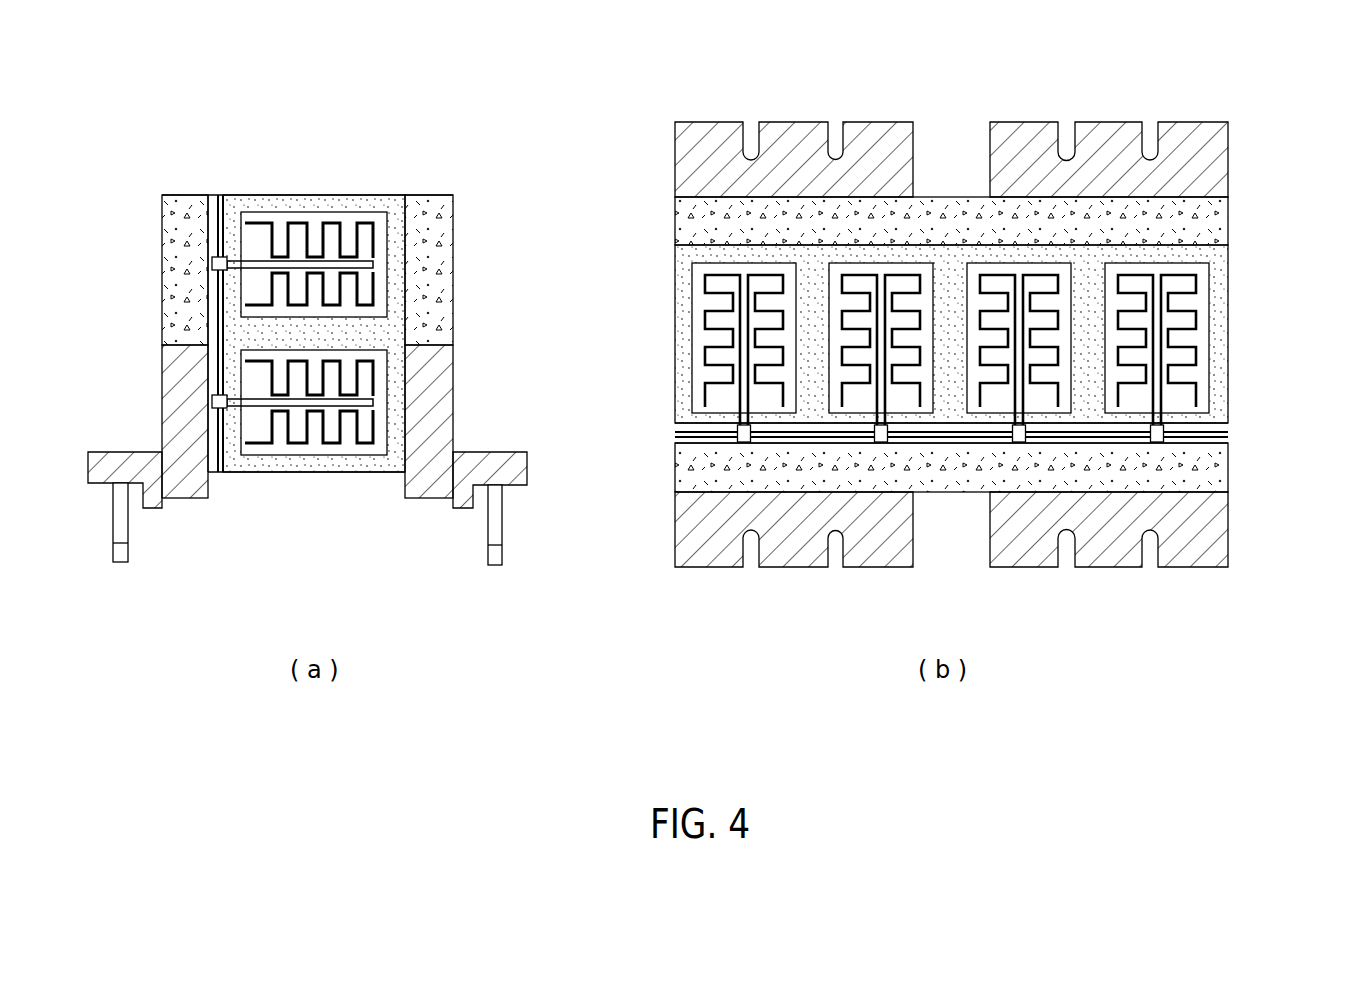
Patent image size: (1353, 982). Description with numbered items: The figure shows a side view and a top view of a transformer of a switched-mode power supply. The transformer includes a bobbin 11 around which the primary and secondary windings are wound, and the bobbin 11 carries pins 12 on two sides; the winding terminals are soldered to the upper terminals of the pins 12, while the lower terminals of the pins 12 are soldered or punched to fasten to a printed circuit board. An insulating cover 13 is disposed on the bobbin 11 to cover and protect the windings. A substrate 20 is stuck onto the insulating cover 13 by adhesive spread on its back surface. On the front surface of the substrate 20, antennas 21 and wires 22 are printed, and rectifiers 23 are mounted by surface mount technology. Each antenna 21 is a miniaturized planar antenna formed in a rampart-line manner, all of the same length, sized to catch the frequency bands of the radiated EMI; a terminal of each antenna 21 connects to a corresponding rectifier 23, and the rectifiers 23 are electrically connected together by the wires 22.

The bobbin 11 is at (503, 468).
The pins 12 is at (499, 524).
The insulating cover 13 is at (450, 280).
The substrate 20 is at (293, 191).
The antennas 21 is at (367, 222).
The wires 22 is at (220, 227).
The rectifiers 23 is at (213, 267).